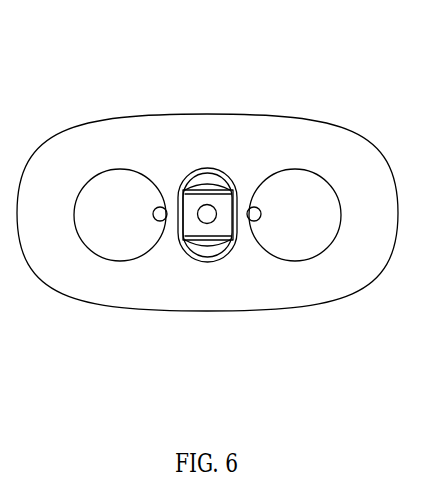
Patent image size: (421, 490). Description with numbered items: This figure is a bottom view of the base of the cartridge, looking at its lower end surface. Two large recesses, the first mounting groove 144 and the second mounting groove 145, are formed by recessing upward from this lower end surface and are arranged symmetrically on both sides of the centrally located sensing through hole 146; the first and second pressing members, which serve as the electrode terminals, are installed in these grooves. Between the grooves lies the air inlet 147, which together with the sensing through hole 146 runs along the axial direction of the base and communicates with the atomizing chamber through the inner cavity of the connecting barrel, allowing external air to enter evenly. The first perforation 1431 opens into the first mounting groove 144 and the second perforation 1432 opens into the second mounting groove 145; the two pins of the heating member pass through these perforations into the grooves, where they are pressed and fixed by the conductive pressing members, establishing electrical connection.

The first mounting groove 144 is at (120, 197).
The second mounting groove 145 is at (300, 197).
The air inlet 147 is at (206, 190).
The sensing through hole 146 is at (207, 216).
The first perforation 1431 is at (157, 223).
The second perforation 1432 is at (255, 225).